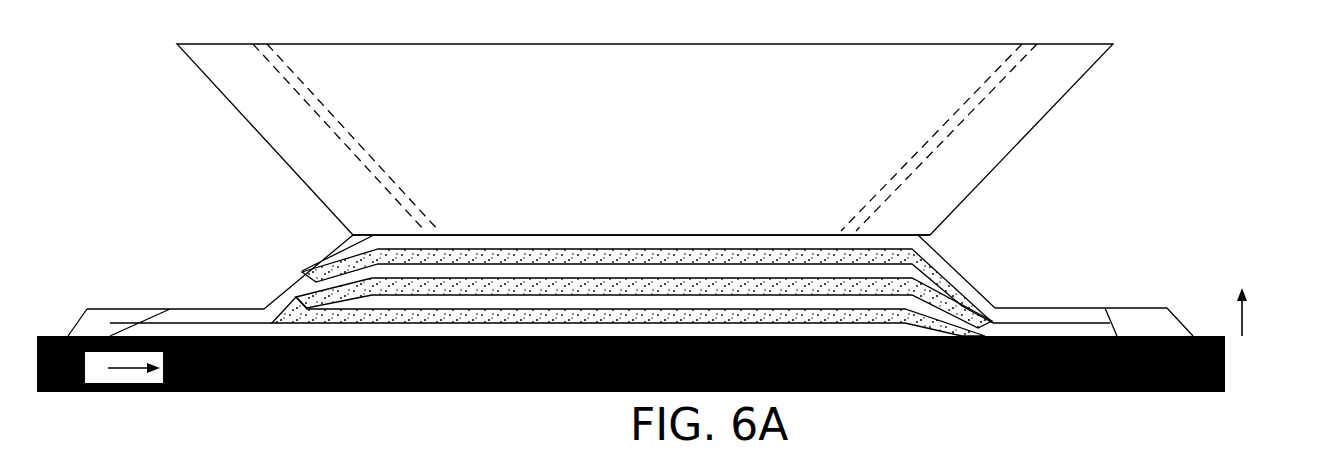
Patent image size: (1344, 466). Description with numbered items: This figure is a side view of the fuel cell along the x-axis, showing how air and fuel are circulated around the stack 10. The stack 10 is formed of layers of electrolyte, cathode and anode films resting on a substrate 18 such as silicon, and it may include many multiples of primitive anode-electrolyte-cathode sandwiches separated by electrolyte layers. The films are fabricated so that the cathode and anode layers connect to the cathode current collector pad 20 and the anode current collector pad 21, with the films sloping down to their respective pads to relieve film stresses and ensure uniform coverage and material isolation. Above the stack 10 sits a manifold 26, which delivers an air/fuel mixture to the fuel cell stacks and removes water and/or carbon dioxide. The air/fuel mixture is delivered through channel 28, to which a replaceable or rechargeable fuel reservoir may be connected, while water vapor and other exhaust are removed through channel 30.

The stack 10 is at (978, 267).
The substrate 18 is at (1225, 380).
The cathode current collector pad 20 is at (113, 318).
The anode current collector pad 21 is at (1138, 312).
The manifold 26 is at (833, 77).
The channel 28 is at (300, 97).
The channel 30 is at (962, 117).